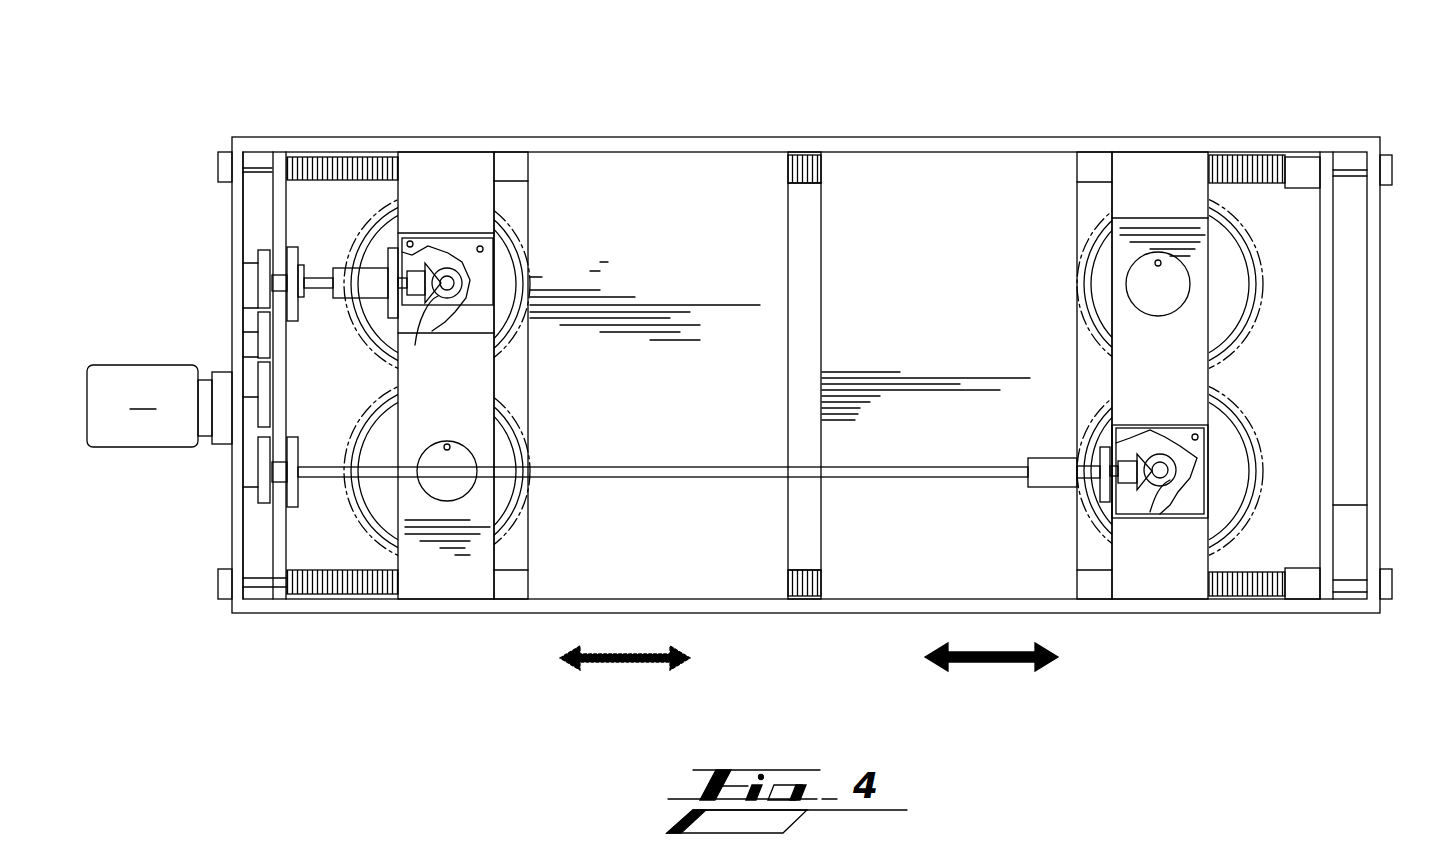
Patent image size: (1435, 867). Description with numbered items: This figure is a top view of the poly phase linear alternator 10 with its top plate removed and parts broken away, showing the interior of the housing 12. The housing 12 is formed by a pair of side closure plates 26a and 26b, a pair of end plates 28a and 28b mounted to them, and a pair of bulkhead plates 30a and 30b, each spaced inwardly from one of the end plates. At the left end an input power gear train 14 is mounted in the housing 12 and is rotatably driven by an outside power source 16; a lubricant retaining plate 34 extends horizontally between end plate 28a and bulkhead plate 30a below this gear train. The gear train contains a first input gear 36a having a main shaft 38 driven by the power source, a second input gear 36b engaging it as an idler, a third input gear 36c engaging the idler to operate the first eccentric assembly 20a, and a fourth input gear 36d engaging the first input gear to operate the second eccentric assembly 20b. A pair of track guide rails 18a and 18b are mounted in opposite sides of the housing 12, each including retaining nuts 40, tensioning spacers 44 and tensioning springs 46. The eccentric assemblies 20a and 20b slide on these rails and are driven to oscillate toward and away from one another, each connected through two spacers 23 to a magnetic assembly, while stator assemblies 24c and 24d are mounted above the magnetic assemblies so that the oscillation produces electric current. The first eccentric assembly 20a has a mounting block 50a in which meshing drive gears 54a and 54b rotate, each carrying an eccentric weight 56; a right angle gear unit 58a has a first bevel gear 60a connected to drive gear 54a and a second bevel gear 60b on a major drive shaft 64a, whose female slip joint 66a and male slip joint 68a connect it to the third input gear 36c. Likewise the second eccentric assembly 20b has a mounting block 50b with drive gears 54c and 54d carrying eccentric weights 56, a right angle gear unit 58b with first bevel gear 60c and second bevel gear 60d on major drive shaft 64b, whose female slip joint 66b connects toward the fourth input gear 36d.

The poly phase linear alternator 10 is at (877, 84).
The housing 12 is at (710, 136).
The input power gear train 14 is at (264, 245).
The outside power source 16 is at (142, 406).
The track guide rail 18a is at (1351, 168).
The track guide rail 18b is at (1340, 600).
The first eccentric assembly 20a is at (367, 216).
The second eccentric assembly 20b is at (1232, 214).
The spacer 23 is at (507, 165).
The stator assembly 24c is at (604, 170).
The stator assembly 24d is at (1012, 194).
The side closure plate 26a is at (900, 140).
The side closure plate 26b is at (880, 612).
The end plate 28a is at (243, 535).
The end plate 28b is at (1383, 482).
The bulkhead plate 30a is at (282, 525).
The bulkhead plate 30b is at (1345, 505).
The lubricant retaining plate 34 is at (255, 550).
The first input gear 36a is at (270, 455).
The second input gear 36b is at (268, 360).
The third input gear 36c is at (258, 300).
The fourth input gear 36d is at (258, 490).
The main shaft 38 is at (235, 385).
The retaining nut 40 is at (224, 150).
The tensioning spacer 44 is at (1305, 160).
The tensioning spring 46 is at (385, 157).
The mounting block 50a is at (512, 372).
The mounting block 50b is at (1262, 390).
The drive gear 54a is at (560, 190).
The drive gear 54b is at (515, 540).
The drive gear 54c is at (1225, 250).
The drive gear 54d is at (1225, 430).
The eccentric weight 56 is at (510, 265).
The right angle gear unit 58a is at (520, 352).
The right angle gear unit 58b is at (1181, 422).
The first bevel gear 60a is at (463, 333).
The second bevel gear 60b is at (446, 309).
The first bevel gear 60c is at (1185, 505).
The second bevel gear 60d is at (1160, 500).
The major drive shaft 64a is at (307, 283).
The major drive shaft 64b is at (708, 465).
The female slip joint 66a is at (368, 250).
The female slip joint 66b is at (1055, 488).
The male slip joint 68a is at (316, 298).